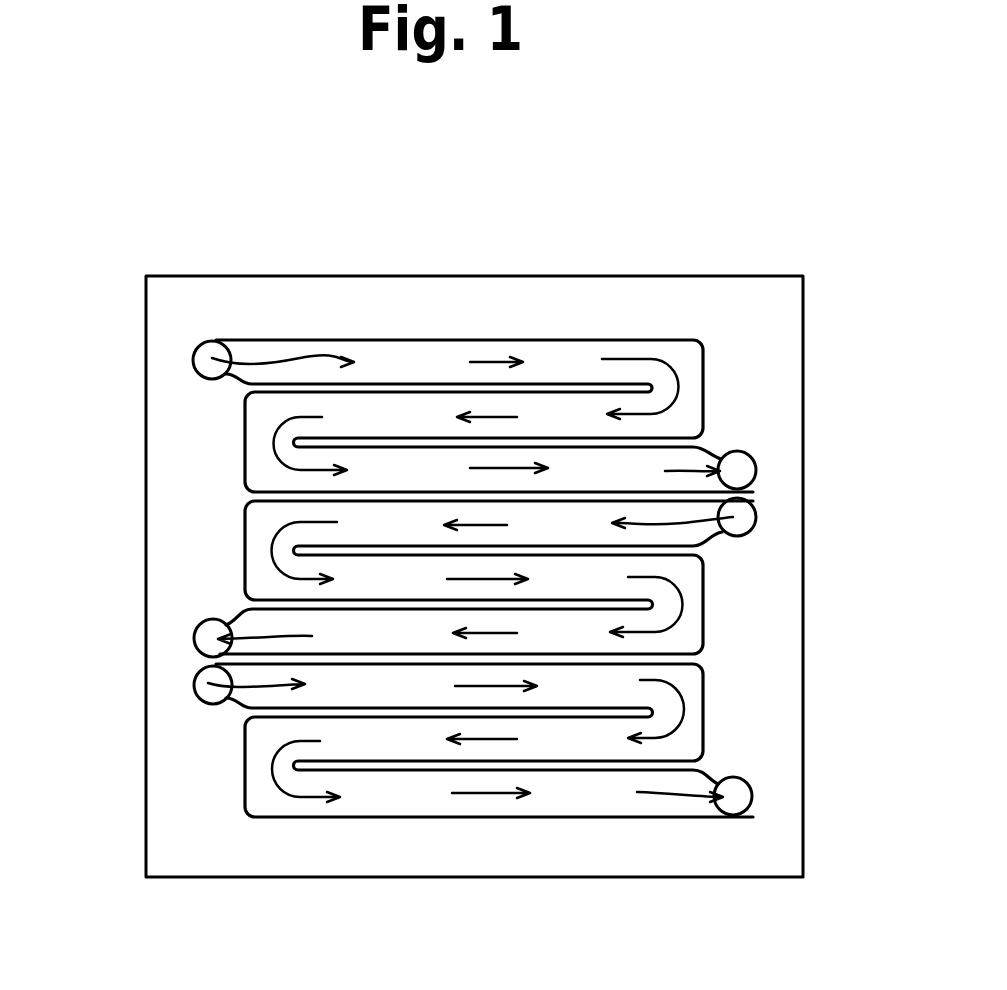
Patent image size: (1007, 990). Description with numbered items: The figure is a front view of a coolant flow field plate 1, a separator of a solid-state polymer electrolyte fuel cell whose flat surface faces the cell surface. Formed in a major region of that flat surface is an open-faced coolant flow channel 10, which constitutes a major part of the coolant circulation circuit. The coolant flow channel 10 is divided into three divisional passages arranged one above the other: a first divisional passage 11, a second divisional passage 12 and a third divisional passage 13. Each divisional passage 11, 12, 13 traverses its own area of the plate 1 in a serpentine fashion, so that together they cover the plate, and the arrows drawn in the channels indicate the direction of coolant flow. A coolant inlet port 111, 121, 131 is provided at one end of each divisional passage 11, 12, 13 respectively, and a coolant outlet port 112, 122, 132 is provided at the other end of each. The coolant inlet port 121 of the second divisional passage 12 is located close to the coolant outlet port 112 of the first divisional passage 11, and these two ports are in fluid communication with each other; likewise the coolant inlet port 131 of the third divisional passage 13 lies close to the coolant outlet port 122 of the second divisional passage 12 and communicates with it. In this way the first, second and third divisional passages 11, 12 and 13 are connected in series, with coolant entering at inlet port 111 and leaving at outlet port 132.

The coolant flow field plate 1 is at (685, 285).
The coolant flow channel 10 is at (487, 300).
The first divisional passage 11 is at (539, 335).
The second divisional passage 12 is at (470, 562).
The third divisional passage 13 is at (468, 817).
The coolant inlet port 111 is at (207, 342).
The coolant outlet port 112 is at (748, 472).
The coolant inlet port 121 is at (748, 517).
The coolant outlet port 122 is at (195, 637).
The coolant inlet port 131 is at (195, 684).
The coolant outlet port 132 is at (738, 812).